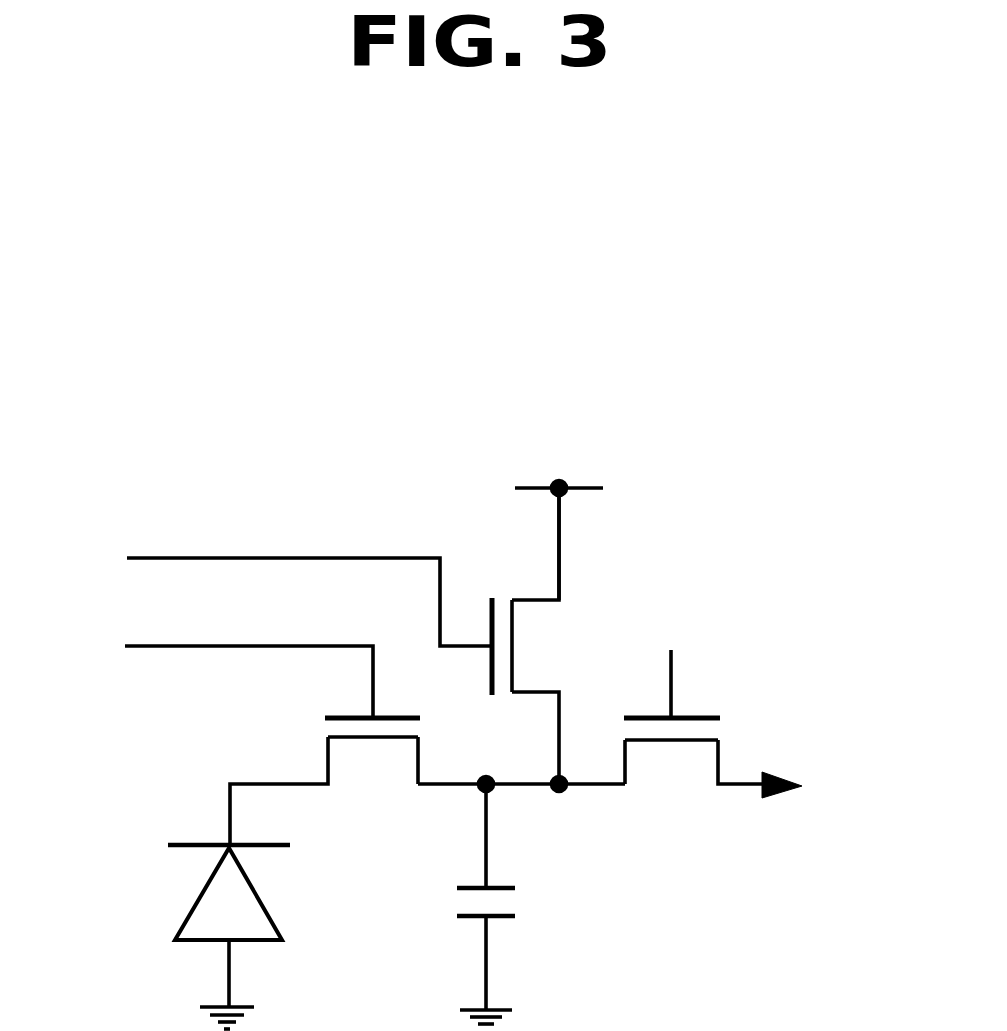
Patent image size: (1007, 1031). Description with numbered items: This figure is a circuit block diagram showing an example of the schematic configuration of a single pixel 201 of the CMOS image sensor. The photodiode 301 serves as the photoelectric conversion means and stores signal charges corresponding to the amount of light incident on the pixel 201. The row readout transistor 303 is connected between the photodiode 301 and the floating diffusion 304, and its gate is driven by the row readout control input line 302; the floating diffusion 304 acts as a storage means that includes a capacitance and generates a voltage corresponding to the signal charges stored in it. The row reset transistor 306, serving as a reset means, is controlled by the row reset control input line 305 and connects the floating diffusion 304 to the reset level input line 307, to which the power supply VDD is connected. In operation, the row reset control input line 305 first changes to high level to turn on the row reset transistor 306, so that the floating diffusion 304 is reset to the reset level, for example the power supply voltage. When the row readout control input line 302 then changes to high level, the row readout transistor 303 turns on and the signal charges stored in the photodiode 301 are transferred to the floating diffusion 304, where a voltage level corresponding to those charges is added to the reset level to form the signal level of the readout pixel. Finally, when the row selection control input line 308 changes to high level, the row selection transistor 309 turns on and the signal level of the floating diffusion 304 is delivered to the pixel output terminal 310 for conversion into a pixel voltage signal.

The pixel 201 is at (497, 345).
The photodiode 301 is at (196, 884).
The row readout control input line 302 is at (161, 646).
The row readout transistor 303 is at (325, 728).
The floating diffusion 304 is at (522, 905).
The row reset control input line 305 is at (161, 558).
The row reset transistor 306 is at (503, 598).
The reset level input line 307 is at (557, 528).
The row selection control input line 308 is at (673, 676).
The row selection transistor 309 is at (720, 733).
The pixel output terminal 310 is at (777, 798).